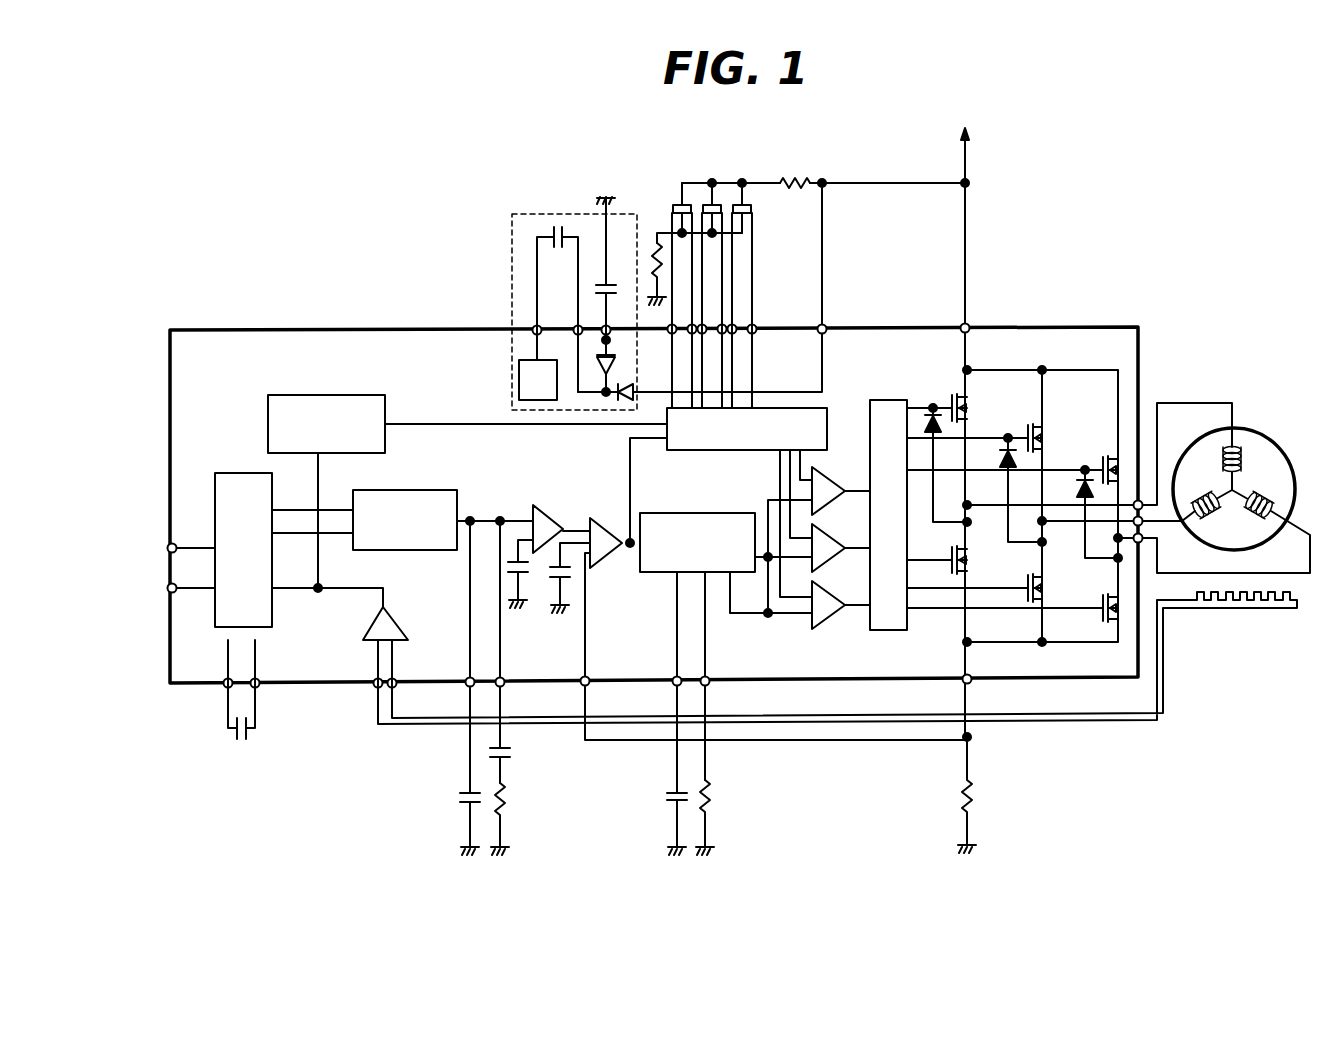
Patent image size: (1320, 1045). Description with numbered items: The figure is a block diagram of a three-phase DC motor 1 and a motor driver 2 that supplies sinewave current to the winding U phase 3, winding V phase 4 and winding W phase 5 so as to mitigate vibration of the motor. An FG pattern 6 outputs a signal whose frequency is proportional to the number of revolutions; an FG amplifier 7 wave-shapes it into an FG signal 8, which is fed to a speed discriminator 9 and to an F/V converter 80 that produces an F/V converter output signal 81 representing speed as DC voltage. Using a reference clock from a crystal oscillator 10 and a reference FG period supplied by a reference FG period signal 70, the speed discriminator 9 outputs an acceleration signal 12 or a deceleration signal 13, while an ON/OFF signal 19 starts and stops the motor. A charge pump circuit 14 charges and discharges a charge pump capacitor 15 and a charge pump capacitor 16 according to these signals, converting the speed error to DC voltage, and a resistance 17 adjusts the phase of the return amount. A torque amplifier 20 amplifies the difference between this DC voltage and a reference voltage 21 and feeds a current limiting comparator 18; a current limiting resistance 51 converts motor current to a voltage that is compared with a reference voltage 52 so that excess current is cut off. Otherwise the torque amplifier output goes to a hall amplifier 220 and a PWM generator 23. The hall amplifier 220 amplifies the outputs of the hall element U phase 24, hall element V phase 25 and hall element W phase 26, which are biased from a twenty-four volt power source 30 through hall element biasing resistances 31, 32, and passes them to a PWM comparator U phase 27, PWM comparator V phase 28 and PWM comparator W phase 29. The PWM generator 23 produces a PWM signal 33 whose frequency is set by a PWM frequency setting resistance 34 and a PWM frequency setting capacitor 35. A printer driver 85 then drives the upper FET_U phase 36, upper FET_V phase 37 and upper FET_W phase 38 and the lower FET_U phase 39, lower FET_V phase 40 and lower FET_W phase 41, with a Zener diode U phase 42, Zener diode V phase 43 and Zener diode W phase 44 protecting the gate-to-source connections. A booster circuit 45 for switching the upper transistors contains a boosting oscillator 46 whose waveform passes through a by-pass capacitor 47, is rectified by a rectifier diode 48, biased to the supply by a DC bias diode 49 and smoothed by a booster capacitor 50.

The three-phase DC motor 1 is at (1237, 466).
The motor driver 2 is at (215, 330).
The winding U phase 3 is at (1222, 464).
The winding V phase 4 is at (1264, 494).
The winding W phase 5 is at (1216, 513).
The FG pattern 6 is at (1299, 603).
The FG amplifier 7 is at (404, 618).
The FG signal 8 is at (384, 586).
The speed discriminator 9 is at (242, 473).
The crystal oscillator 10 is at (243, 743).
The acceleration signal 12 is at (330, 510).
The deceleration signal 13 is at (331, 534).
The charge pump circuit 14 is at (427, 490).
The charge pump capacitor 15 is at (457, 796).
The charge pump capacitor 16 is at (511, 754).
The resistance 17 is at (506, 799).
The current limiting comparator 18 is at (604, 518).
The ON/OFF signal 19 is at (196, 546).
The torque amplifier 20 is at (546, 505).
The reference voltage 21 is at (530, 576).
The PWM generator 23 is at (732, 513).
The hall element U phase 24 is at (684, 204).
The hall element V phase 25 is at (714, 204).
The hall element W phase 26 is at (752, 206).
The PWM comparator U phase 27 is at (836, 476).
The PWM comparator V phase 28 is at (836, 533).
The PWM comparator W phase 29 is at (836, 589).
The 24 volt power source 30 is at (960, 136).
The hall element biasing resistance 31 is at (795, 177).
The hall element biasing resistance 32 is at (655, 236).
The PWM signal 33 is at (750, 615).
The PWM frequency setting resistance 34 is at (714, 789).
The PWM frequency setting capacitor 35 is at (663, 796).
The upper FET_U phase 36 is at (955, 393).
The upper FET_V phase 37 is at (1030, 423).
The upper FET_W phase 38 is at (1104, 455).
The lower FET_U phase 39 is at (950, 545).
The lower FET_V phase 40 is at (1028, 575).
The lower FET_W phase 41 is at (1102, 600).
The Zener diode U phase 42 is at (930, 411).
The Zener diode V phase 43 is at (1006, 450).
The Zener diode W phase 44 is at (1084, 480).
The booster circuit 45 is at (545, 214).
The boosting oscillator 46 is at (519, 376).
The by-pass capacitor 47 is at (560, 250).
The rectifier diode 48 is at (617, 362).
The DC bias diode 49 is at (626, 404).
The booster capacitor 50 is at (610, 284).
The current limiting resistance 51 is at (974, 786).
The reference voltage 52 is at (570, 583).
The reference FG period signal 70 is at (196, 592).
The F/V converter 80 is at (340, 395).
The F/V converter output signal 81 is at (419, 424).
The printer driver 85 is at (875, 400).
The hall amplifier 220 is at (698, 450).